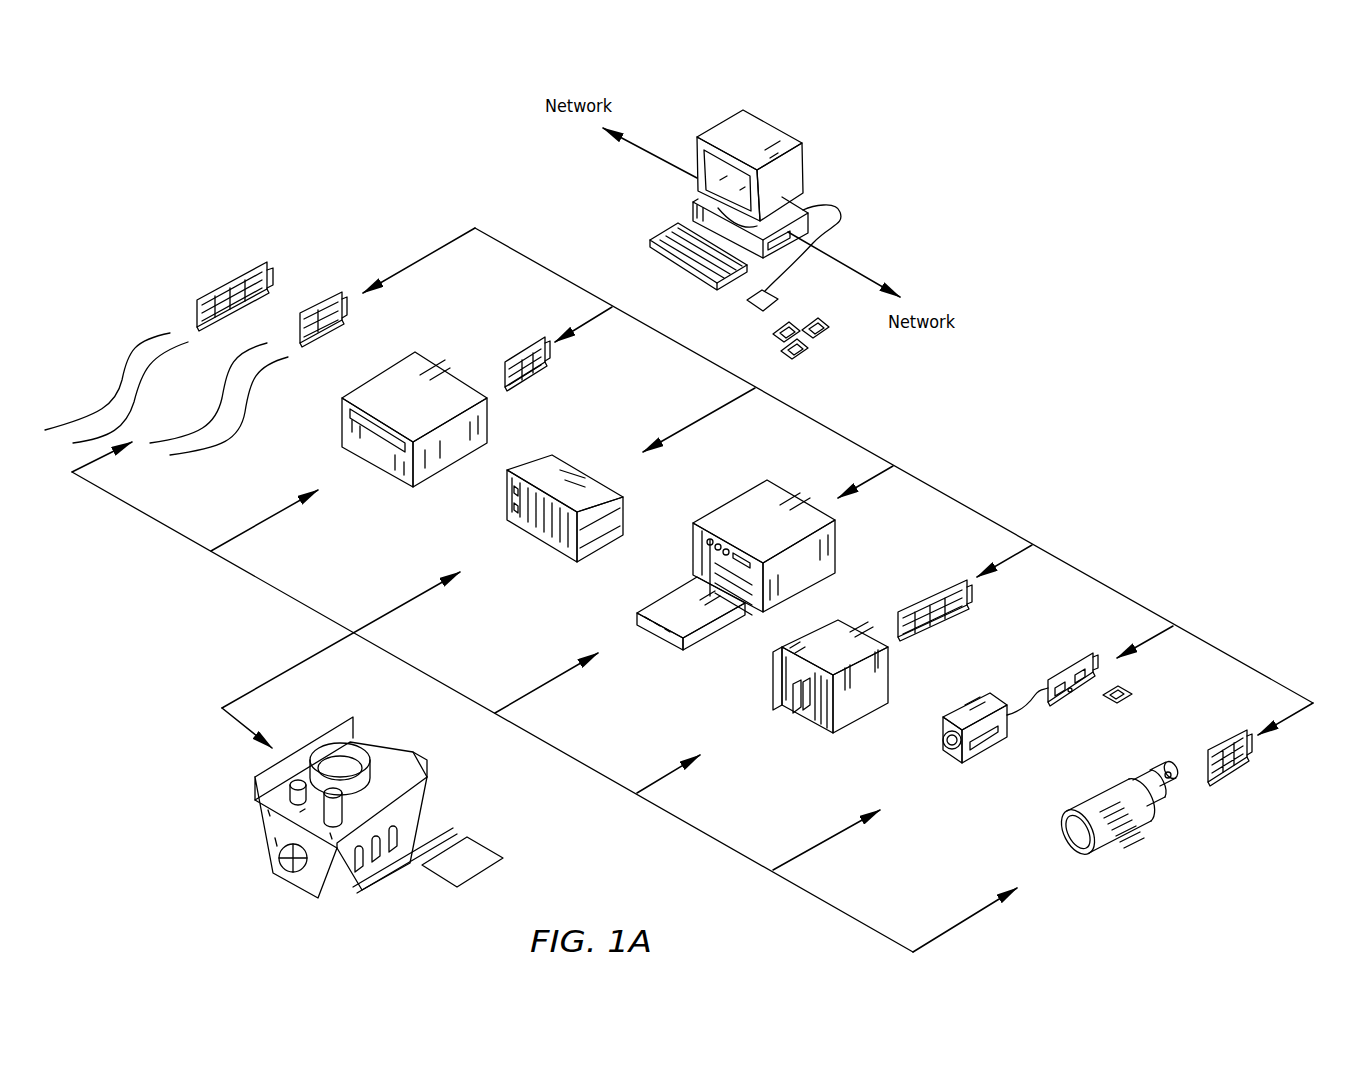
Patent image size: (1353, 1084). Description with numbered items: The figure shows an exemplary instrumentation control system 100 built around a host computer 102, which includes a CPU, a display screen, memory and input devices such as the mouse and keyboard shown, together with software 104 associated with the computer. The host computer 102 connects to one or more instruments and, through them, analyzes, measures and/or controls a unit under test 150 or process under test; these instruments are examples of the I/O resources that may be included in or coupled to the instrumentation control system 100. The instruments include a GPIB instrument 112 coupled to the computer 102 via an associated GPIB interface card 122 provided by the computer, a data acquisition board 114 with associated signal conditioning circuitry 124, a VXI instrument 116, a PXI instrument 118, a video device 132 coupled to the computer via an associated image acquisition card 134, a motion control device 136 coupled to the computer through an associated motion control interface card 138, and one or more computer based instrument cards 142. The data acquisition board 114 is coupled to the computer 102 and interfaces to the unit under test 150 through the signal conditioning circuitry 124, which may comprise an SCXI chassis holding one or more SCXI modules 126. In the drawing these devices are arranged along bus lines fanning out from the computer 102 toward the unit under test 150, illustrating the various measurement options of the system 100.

The instrumentation control system 100 is at (1102, 205).
The host computer 102 is at (768, 133).
The software 104 is at (798, 348).
The GPIB instrument 112 is at (392, 390).
The data acquisition board 114 is at (955, 578).
The VXI instrument 116 is at (743, 515).
The PXI instrument 118 is at (538, 470).
The GPIB interface card 122 is at (522, 350).
The signal conditioning circuitry 124 is at (785, 687).
The SCXI module 126 is at (803, 703).
The video device 132 is at (980, 740).
The image acquisition card 134 is at (1068, 663).
The motion control device 136 is at (1097, 843).
The motion control interface card 138 is at (1230, 770).
The computer based instrument card 142 is at (200, 302).
The unit under test 150 is at (270, 822).